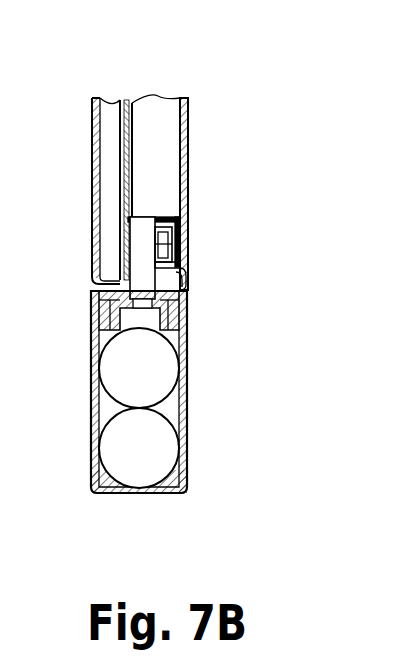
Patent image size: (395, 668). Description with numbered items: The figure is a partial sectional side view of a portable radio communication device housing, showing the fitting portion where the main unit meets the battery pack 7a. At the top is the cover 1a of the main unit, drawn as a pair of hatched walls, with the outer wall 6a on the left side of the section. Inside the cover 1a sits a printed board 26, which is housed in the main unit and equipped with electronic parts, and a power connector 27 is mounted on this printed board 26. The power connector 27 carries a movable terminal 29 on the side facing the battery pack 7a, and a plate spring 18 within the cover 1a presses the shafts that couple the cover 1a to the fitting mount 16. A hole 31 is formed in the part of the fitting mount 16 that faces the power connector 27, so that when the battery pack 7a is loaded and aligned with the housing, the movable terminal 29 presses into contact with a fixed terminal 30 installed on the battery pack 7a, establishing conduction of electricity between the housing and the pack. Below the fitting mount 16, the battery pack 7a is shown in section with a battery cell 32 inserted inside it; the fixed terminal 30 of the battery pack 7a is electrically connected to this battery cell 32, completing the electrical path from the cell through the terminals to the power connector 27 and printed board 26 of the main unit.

The cover 1a is at (188, 135).
The outer tube wall 6a is at (92, 152).
The printed board 26 is at (132, 148).
The power connector 27 is at (126, 240).
The plate spring 18 is at (188, 200).
The hole 31 is at (188, 282).
The movable terminal 29 is at (92, 300).
The fitting mount 16 is at (188, 305).
The battery pack 7a is at (91, 402).
The fixed terminal 30 is at (150, 328).
The battery cell 32 is at (188, 428).